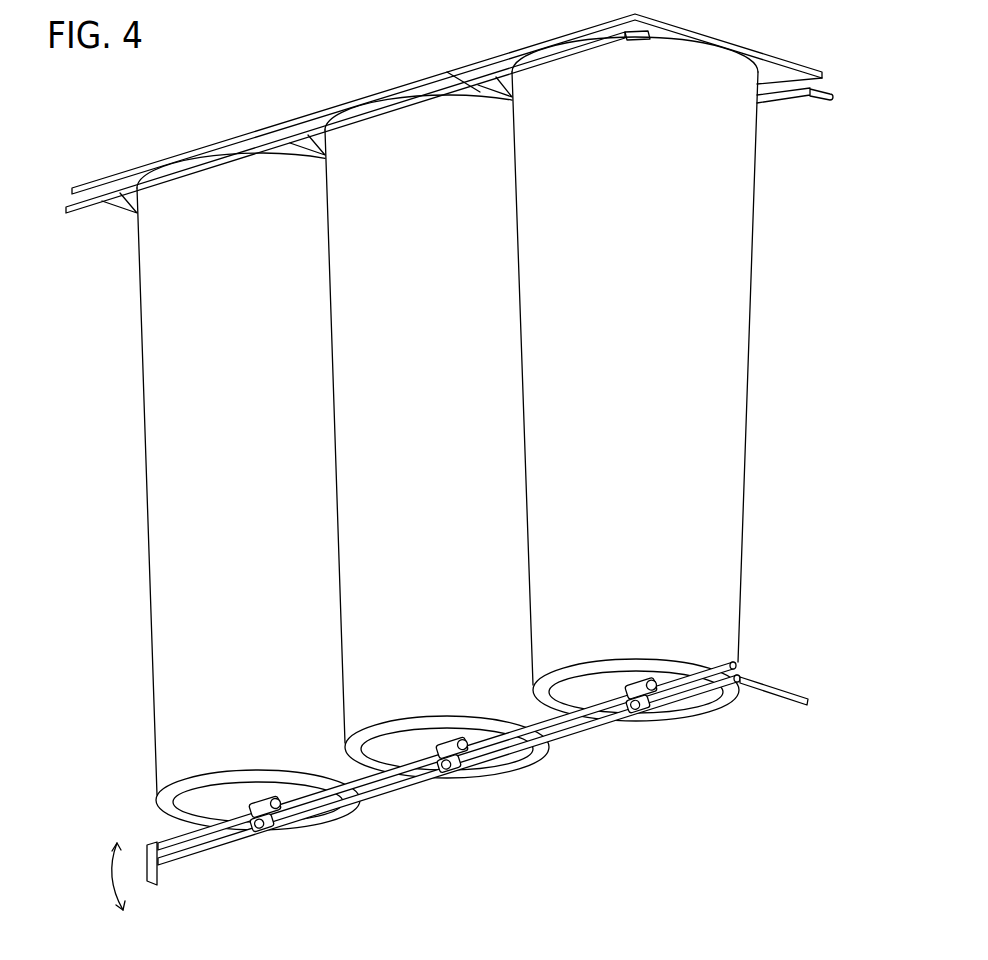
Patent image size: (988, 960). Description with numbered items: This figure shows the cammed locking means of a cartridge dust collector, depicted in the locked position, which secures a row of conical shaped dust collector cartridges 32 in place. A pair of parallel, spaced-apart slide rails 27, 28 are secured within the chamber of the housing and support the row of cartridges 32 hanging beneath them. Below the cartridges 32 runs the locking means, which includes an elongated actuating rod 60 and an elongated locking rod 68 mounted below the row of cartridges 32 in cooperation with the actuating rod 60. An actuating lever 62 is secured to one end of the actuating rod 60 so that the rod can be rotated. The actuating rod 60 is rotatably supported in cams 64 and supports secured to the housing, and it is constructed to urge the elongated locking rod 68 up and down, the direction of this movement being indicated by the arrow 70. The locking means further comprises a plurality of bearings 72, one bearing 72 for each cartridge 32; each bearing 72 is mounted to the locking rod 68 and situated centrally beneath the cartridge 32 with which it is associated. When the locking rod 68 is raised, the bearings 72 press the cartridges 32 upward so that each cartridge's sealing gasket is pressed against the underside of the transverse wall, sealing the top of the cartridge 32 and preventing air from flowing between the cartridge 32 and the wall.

The slide rail 27 is at (122, 192).
The slide rail 28 is at (778, 103).
The dust collector cartridge 32 is at (472, 487).
The actuating rod 60 is at (740, 685).
The actuating lever 62 is at (783, 702).
The cam 64 is at (253, 827).
The locking rod 68 is at (735, 660).
The arrow 70 is at (114, 876).
The bearing 72 is at (273, 825).